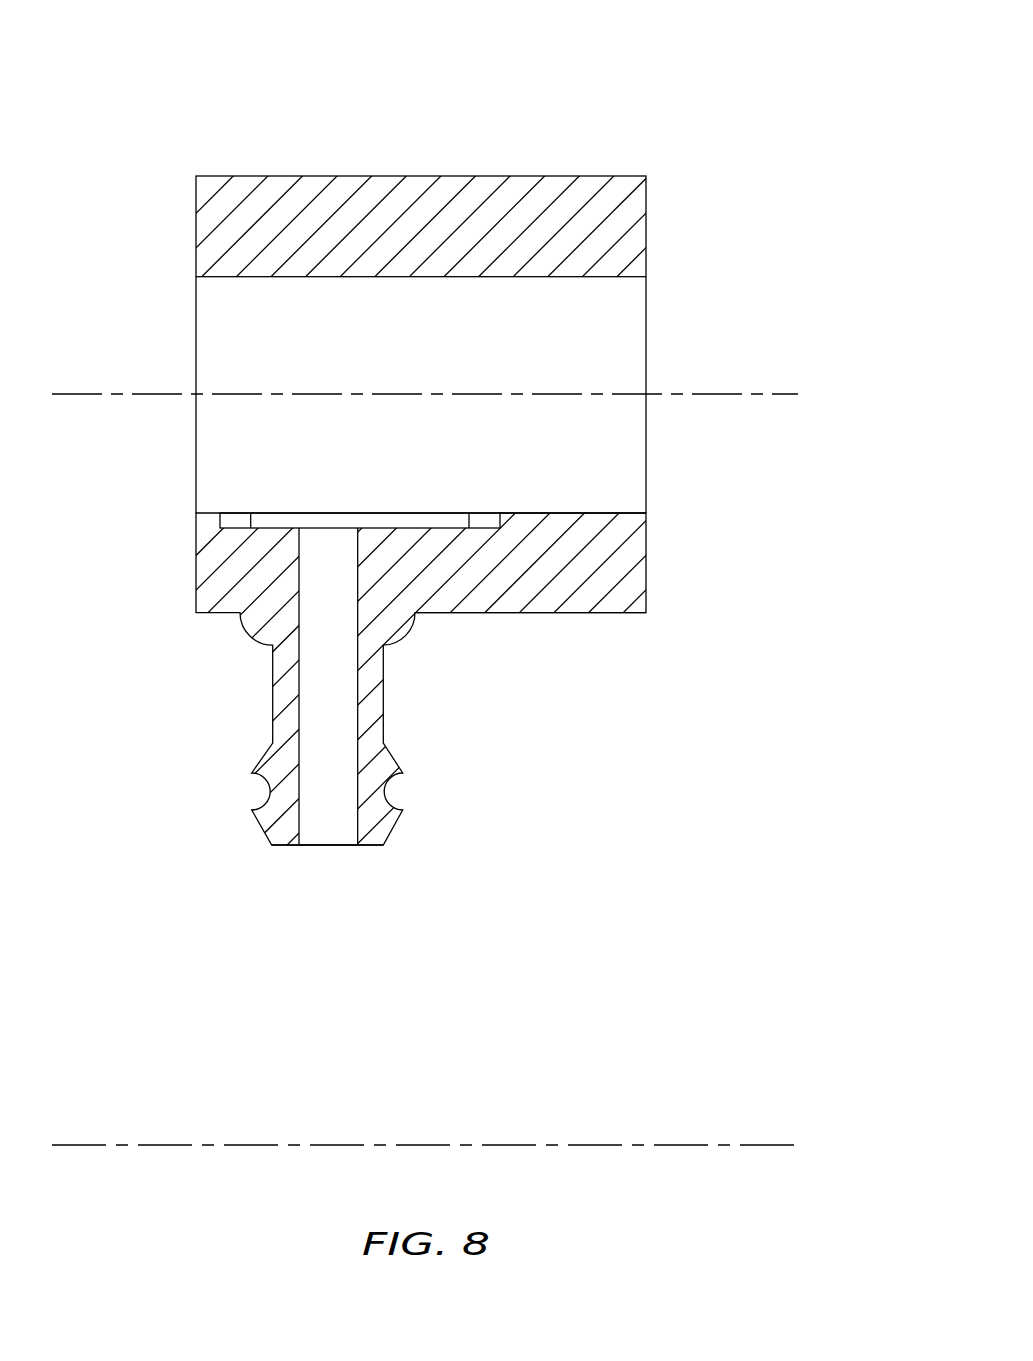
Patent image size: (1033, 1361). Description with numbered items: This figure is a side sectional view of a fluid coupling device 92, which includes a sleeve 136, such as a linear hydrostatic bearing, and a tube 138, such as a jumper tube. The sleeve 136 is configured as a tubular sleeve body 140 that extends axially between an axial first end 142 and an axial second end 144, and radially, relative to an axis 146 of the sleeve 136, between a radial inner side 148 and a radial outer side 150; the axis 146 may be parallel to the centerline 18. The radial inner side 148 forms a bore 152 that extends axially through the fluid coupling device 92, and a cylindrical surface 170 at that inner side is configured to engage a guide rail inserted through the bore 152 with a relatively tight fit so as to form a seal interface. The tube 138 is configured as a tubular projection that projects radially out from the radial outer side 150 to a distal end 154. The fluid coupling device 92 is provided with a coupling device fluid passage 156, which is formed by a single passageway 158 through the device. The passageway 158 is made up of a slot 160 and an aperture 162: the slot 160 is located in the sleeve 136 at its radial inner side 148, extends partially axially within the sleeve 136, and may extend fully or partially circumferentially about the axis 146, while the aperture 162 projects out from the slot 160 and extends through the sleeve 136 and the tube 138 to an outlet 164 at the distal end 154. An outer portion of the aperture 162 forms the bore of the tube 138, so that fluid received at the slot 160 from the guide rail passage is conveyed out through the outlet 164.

The fluid coupling device 92 is at (146, 131).
The sleeve 136 is at (607, 168).
The sleeve body 140 is at (516, 499).
The axial first end 142 is at (196, 223).
The axial second end 144 is at (646, 228).
The axis 146 is at (780, 396).
The radial inner side 148 is at (617, 513).
The radial outer side 150 is at (618, 613).
The bore 152 is at (622, 342).
The distal end 154 is at (285, 847).
The coupling device fluid passage 156 is at (342, 674).
The passageway 158 is at (356, 686).
The slot 160 is at (267, 522).
The aperture 162 is at (323, 648).
The outlet 164 is at (328, 847).
The cylindrical surface 170 is at (550, 513).
The tube 138 is at (254, 722).
The centerline 18 is at (777, 1143).